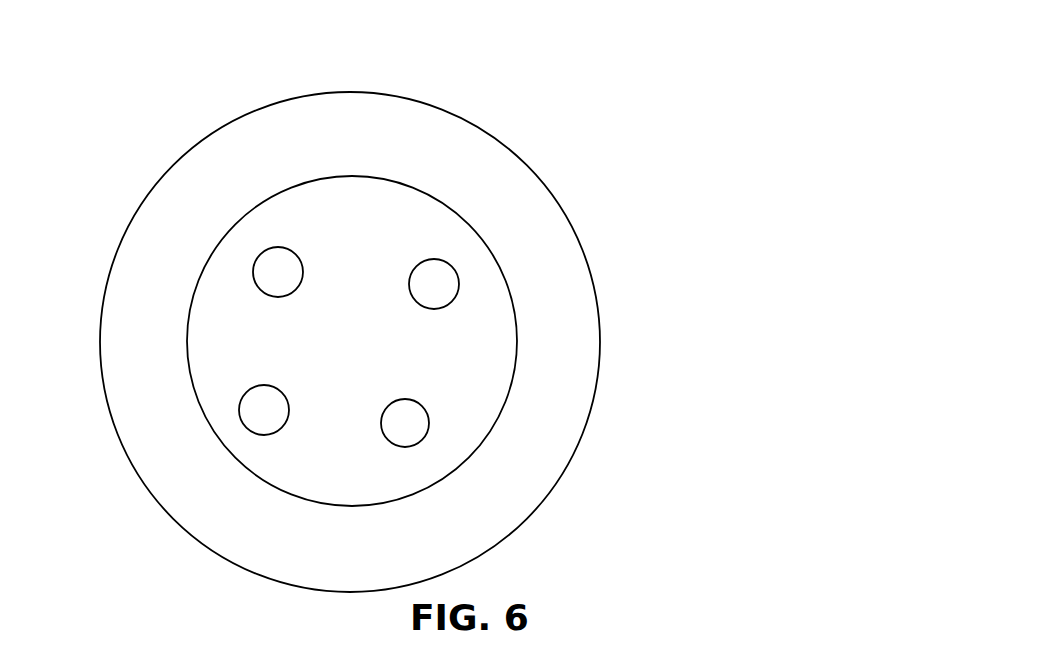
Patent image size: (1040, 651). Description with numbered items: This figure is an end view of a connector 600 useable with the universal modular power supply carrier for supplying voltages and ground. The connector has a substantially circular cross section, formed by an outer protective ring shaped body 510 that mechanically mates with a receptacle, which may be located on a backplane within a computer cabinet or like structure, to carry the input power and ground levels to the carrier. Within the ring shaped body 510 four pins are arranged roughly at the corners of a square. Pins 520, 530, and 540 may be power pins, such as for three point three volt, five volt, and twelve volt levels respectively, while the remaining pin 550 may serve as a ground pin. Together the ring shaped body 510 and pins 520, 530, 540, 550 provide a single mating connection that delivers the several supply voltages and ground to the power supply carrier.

The connector 600 is at (614, 78).
The protective ring shaped body 510 is at (602, 340).
The pin 520 is at (457, 268).
The pin 530 is at (253, 272).
The pin 540 is at (248, 432).
The ground pin 550 is at (425, 440).